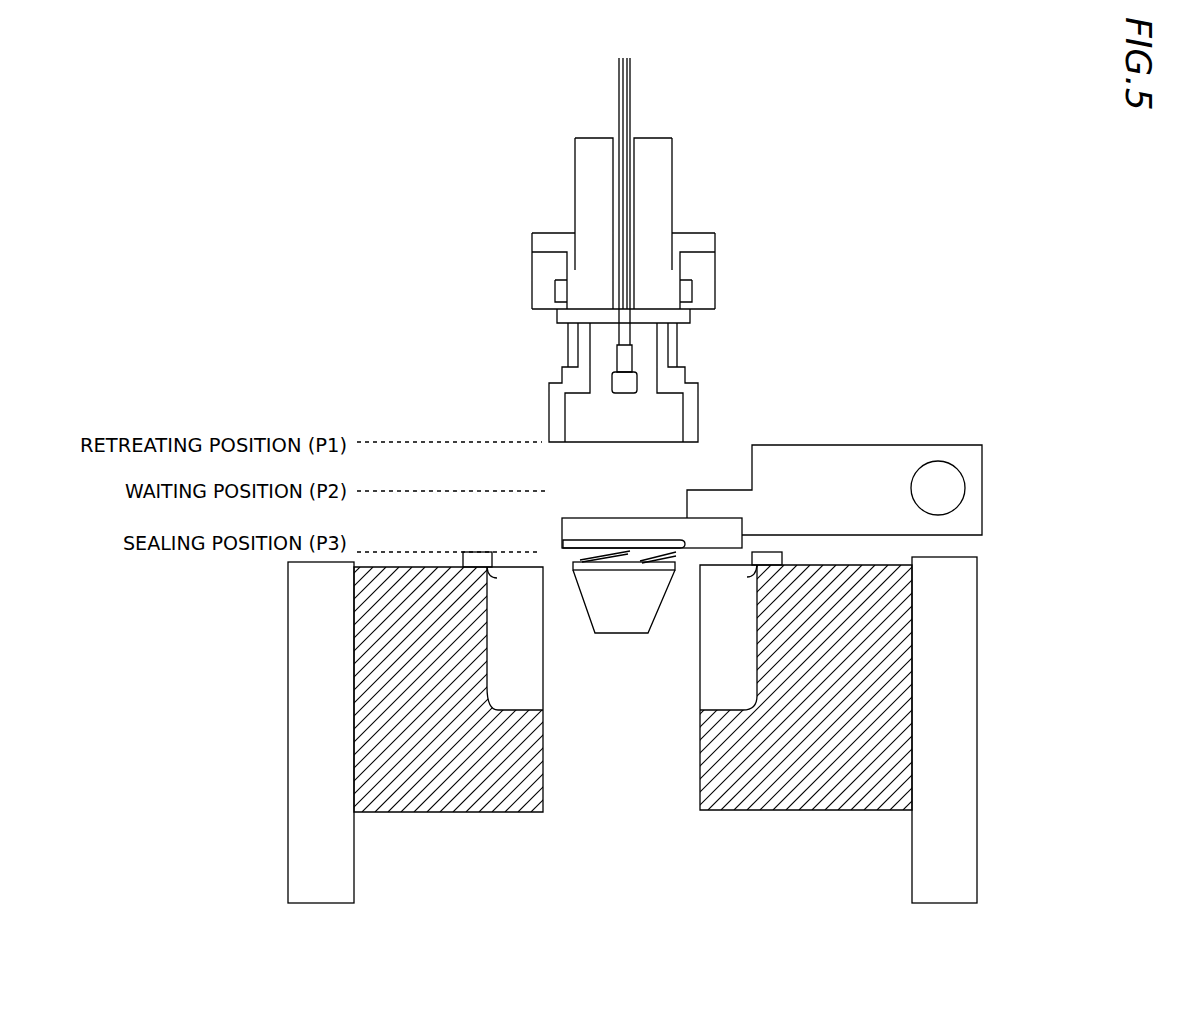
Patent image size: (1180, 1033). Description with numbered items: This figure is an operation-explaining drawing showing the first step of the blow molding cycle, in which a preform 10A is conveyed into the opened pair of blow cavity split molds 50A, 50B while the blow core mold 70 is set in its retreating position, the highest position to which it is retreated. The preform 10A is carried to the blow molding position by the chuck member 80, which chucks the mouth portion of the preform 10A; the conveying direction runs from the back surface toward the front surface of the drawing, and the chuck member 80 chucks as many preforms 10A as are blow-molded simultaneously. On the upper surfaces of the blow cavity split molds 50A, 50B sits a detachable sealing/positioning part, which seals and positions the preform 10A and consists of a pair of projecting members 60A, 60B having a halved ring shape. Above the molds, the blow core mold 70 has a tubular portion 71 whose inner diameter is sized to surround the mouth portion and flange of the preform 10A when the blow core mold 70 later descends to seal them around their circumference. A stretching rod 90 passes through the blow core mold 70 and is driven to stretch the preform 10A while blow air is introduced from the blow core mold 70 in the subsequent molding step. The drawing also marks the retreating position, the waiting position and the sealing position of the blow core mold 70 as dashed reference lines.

The preform 10A is at (628, 635).
The blow cavity split mold 50A is at (430, 712).
The blow cavity split mold 50B is at (840, 712).
The projecting member 60A is at (477, 550).
The projecting member 60B is at (768, 552).
The blow core mold 70 is at (519, 272).
The tubular portion 71 is at (698, 407).
The chuck member 80 is at (847, 445).
The stretching rod 90 is at (630, 106).